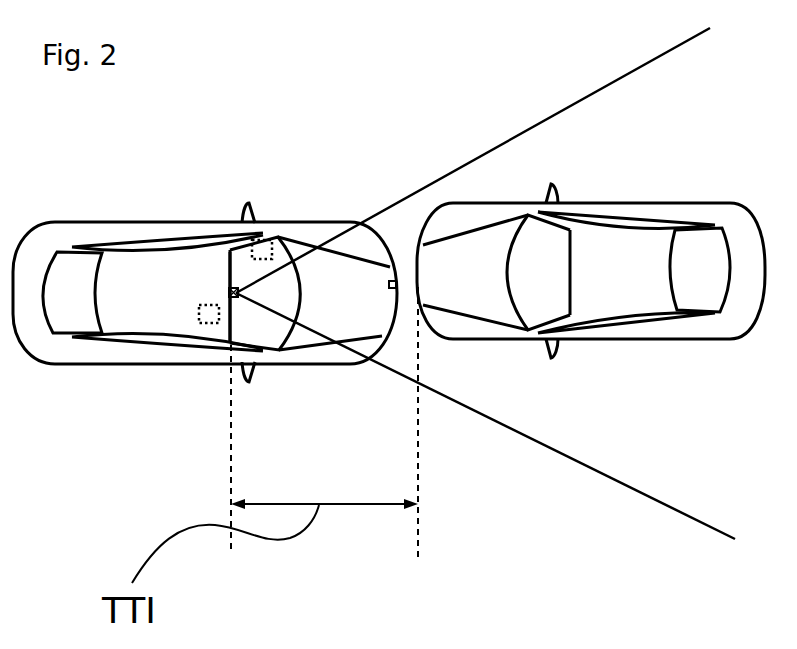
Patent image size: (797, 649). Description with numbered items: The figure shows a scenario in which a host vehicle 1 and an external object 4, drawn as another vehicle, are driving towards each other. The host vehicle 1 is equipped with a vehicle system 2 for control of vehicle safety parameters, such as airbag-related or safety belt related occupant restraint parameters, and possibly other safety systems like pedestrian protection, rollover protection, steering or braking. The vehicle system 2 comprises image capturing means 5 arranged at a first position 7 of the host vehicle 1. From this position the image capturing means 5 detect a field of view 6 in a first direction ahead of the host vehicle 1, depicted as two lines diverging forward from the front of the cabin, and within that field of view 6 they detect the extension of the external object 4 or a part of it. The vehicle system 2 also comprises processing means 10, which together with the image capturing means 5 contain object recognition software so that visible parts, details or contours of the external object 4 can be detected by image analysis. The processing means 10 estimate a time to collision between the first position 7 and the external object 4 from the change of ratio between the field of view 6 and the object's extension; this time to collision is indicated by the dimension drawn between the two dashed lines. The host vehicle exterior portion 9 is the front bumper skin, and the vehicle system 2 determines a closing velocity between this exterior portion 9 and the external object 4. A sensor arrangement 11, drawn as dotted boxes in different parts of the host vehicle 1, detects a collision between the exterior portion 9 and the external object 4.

The host vehicle 1 is at (92, 406).
The vehicle system 2 is at (431, 294).
The external object 4 is at (668, 142).
The image capturing means 5 is at (218, 284).
The field of view 6 is at (586, 468).
The first position 7 is at (188, 280).
The host vehicle exterior portion 9 is at (401, 252).
The processing means 10 is at (266, 215).
The sensor arrangement 11 is at (380, 272).